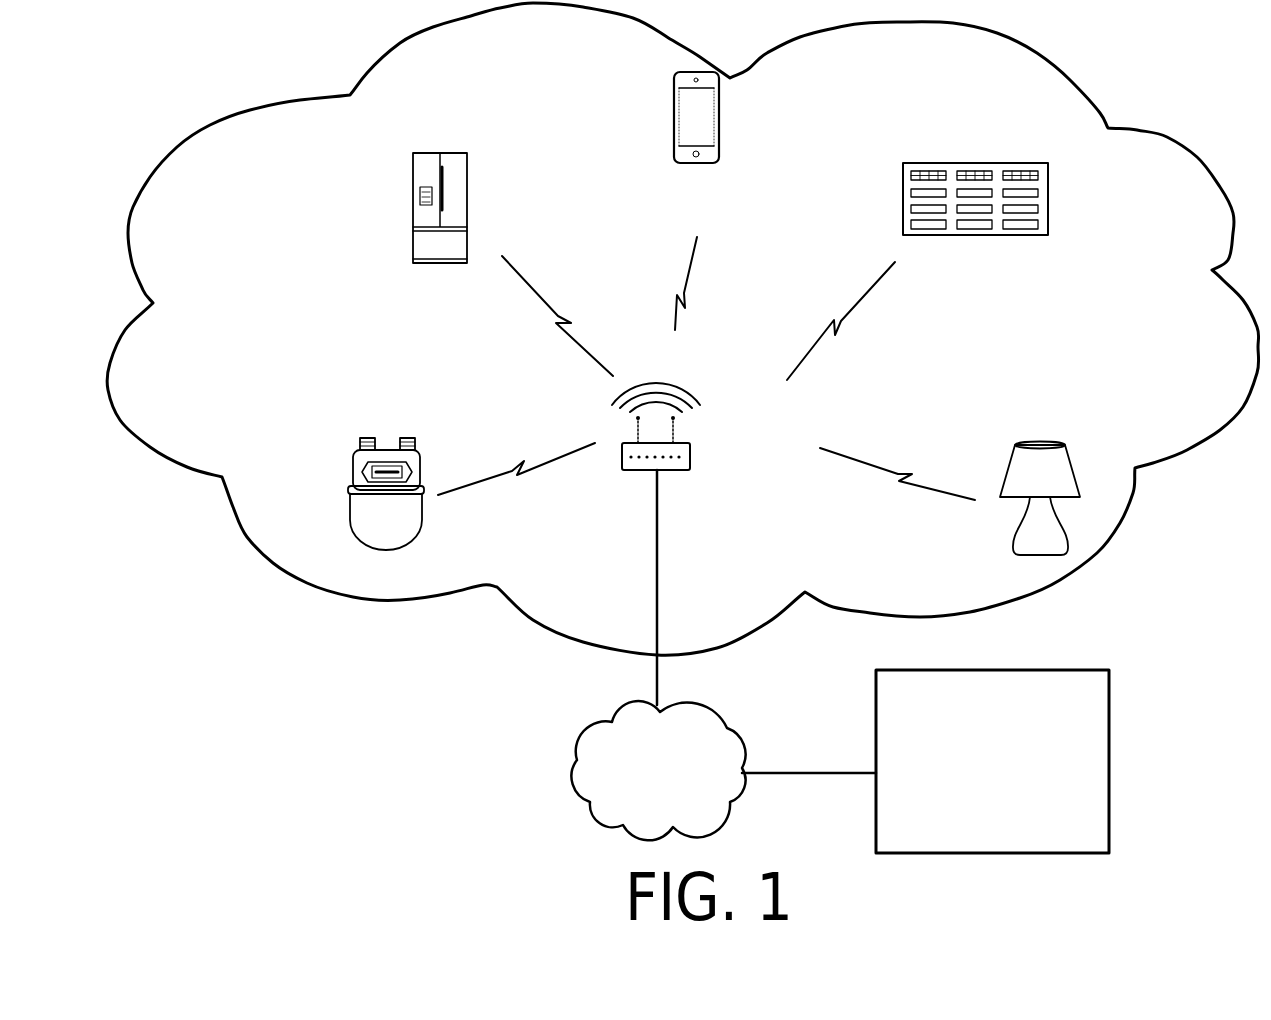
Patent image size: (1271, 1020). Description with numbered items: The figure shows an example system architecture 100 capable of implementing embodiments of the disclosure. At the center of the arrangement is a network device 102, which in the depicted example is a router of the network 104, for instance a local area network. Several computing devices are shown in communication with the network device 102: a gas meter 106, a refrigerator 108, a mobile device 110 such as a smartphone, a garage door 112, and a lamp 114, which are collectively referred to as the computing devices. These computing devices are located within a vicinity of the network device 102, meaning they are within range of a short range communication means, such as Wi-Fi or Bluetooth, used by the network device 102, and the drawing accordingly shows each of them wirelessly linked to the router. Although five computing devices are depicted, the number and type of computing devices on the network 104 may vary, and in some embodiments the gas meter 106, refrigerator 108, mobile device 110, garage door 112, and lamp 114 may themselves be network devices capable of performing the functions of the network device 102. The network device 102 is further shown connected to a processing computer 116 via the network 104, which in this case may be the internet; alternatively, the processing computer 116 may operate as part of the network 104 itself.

The system 100 is at (294, 773).
The network device 102 is at (706, 505).
The network 104 is at (1076, 82).
The gas meter 106 is at (390, 478).
The refrigerator 108 is at (361, 208).
The mobile device 110 is at (692, 148).
The garage door 112 is at (975, 223).
The lamp 114 is at (1040, 485).
The processing computer 116 is at (1097, 775).